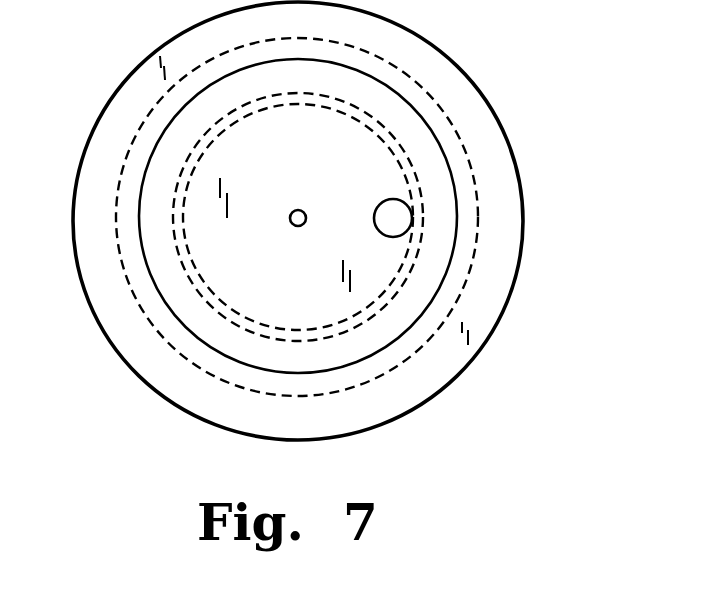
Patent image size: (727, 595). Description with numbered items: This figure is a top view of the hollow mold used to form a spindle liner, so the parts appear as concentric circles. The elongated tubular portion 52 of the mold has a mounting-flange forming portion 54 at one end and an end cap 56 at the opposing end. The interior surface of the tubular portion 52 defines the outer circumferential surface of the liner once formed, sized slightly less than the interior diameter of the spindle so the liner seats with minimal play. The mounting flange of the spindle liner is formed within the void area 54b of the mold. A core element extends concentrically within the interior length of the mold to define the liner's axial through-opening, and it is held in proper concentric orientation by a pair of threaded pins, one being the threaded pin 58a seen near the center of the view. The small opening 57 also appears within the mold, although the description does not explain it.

The elongated tubular portion 52 is at (332, 97).
The mounting-flange forming portion 54 is at (100, 325).
The void area 54b is at (473, 262).
The end cap 56 is at (217, 80).
The aperture 57 is at (395, 201).
The threaded pin 58a is at (289, 212).